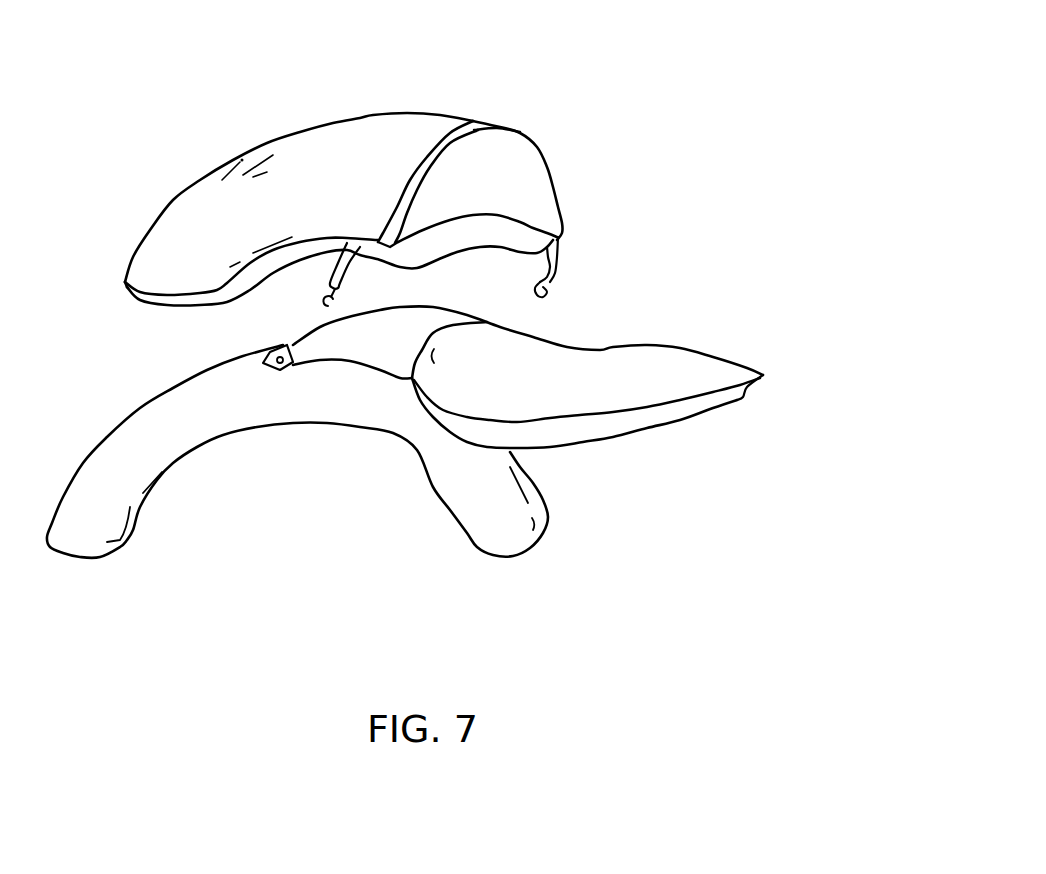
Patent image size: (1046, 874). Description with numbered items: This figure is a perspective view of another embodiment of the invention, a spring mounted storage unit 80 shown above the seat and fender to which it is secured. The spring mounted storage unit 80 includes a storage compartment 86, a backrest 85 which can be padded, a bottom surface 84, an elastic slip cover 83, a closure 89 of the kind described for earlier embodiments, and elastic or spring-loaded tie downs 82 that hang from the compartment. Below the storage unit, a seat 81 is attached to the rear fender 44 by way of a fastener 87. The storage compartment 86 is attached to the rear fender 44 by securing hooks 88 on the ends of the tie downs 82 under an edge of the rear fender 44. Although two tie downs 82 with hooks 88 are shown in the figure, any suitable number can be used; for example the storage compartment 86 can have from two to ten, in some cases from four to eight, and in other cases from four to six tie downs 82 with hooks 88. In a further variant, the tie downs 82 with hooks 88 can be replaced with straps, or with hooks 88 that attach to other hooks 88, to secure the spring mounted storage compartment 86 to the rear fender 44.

The spring mounted storage unit 80 is at (252, 100).
The storage compartment 86 is at (375, 140).
The closure 89 is at (475, 131).
The backrest 85 is at (495, 163).
The bottom surface 84 is at (488, 215).
The elastic slip cover 83 is at (517, 233).
The tie down 82 is at (553, 250).
The hook 88 is at (548, 292).
The fastener 87 is at (270, 367).
The rear fender 44 is at (470, 490).
The seat 81 is at (683, 373).